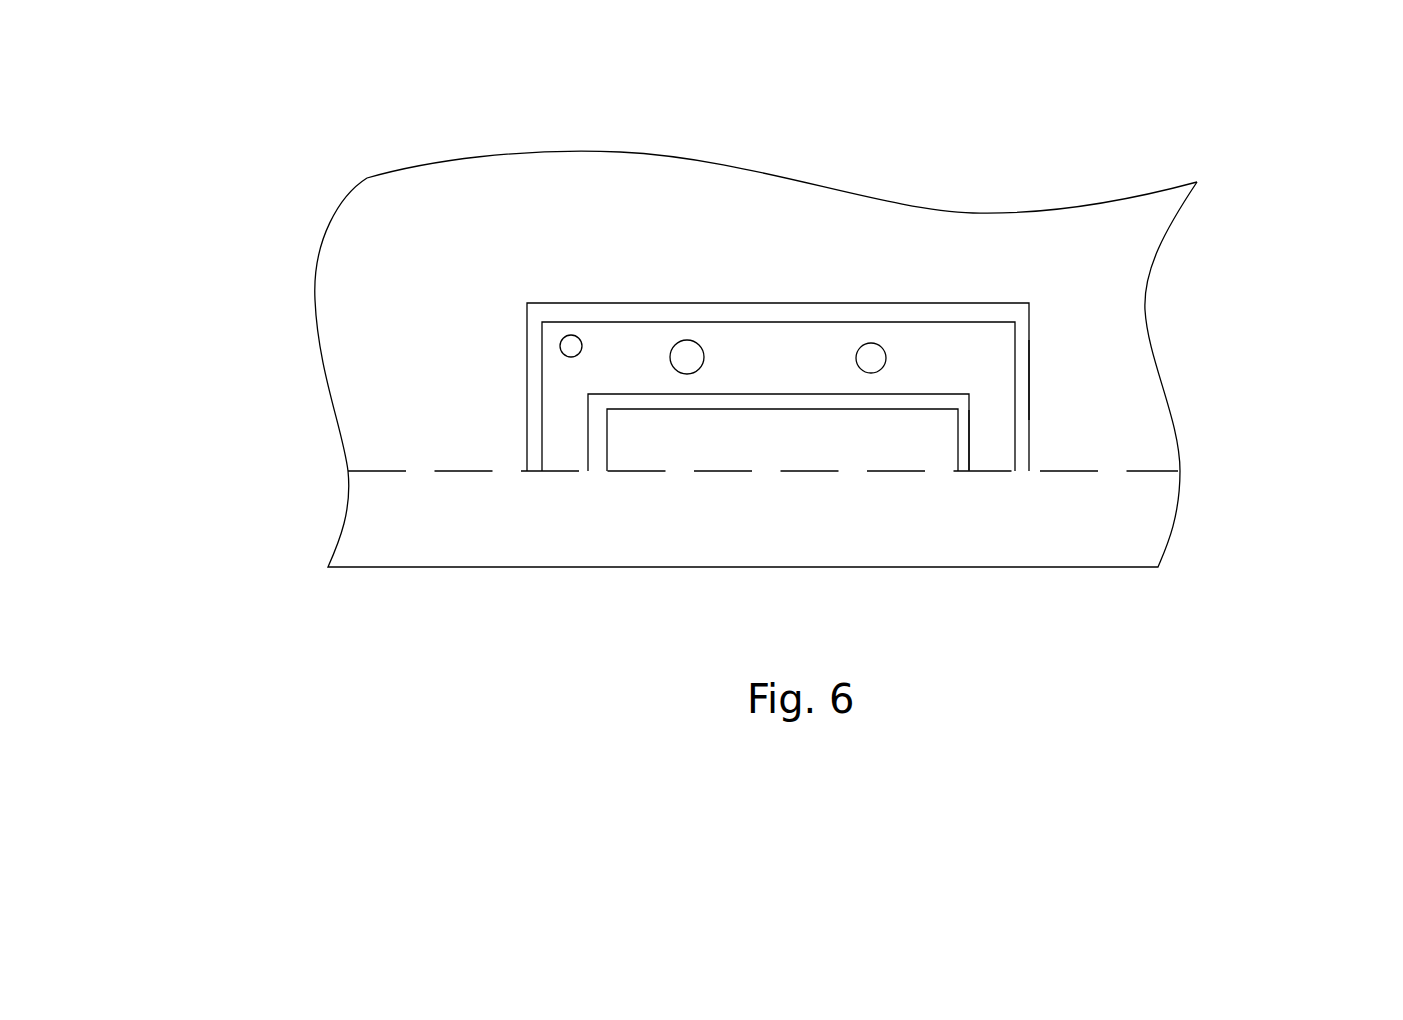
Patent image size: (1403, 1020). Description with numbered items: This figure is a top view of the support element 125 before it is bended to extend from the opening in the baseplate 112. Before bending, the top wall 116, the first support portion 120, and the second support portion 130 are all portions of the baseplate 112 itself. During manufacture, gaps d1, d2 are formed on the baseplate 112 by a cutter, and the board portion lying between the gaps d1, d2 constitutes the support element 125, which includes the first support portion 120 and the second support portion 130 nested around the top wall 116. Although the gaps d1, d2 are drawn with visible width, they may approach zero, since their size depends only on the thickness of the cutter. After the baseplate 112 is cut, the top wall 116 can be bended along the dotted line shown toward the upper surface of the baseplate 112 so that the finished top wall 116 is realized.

The baseplate 112 is at (795, 233).
The top wall 116 is at (1080, 530).
The support element 125 is at (577, 372).
The first support portion 120 is at (735, 355).
The second support portion 130 is at (557, 409).
The gap d1 is at (1031, 379).
The gap d2 is at (971, 439).